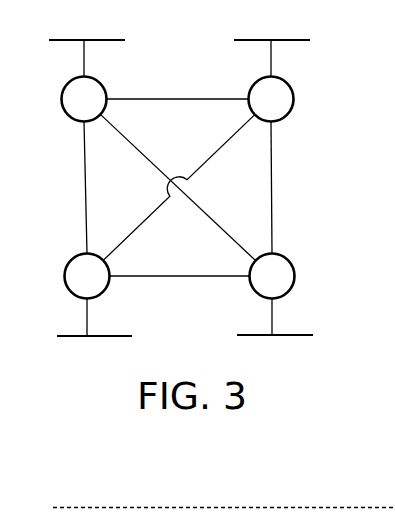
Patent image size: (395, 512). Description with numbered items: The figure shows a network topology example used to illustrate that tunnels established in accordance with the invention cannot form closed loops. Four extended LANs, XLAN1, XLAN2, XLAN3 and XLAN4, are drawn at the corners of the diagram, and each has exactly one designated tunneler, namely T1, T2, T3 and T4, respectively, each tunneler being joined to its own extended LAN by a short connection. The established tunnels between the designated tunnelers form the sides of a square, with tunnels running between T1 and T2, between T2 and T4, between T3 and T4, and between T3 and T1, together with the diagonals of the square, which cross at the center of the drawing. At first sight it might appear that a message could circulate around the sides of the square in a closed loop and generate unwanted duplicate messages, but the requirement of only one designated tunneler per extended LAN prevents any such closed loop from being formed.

The designated tunneler T1 is at (84, 99).
The designated tunneler T2 is at (271, 99).
The designated tunneler T3 is at (87, 276).
The designated tunneler T4 is at (272, 276).
The extended LAN XLAN1 is at (87, 43).
The extended LAN XLAN2 is at (272, 43).
The extended LAN XLAN3 is at (94, 333).
The extended LAN XLAN4 is at (275, 333).